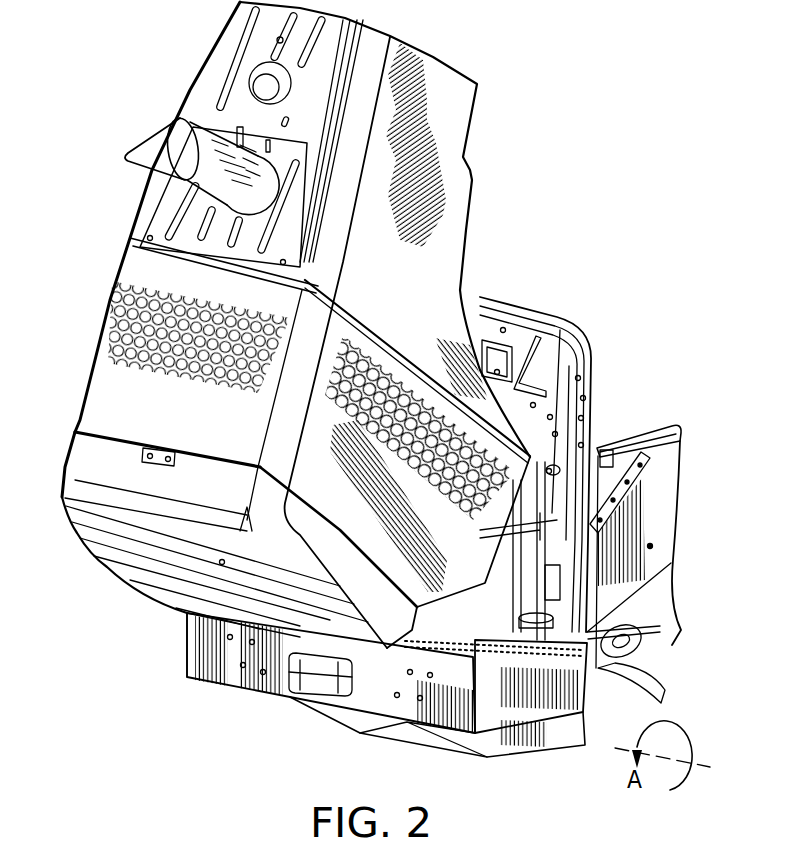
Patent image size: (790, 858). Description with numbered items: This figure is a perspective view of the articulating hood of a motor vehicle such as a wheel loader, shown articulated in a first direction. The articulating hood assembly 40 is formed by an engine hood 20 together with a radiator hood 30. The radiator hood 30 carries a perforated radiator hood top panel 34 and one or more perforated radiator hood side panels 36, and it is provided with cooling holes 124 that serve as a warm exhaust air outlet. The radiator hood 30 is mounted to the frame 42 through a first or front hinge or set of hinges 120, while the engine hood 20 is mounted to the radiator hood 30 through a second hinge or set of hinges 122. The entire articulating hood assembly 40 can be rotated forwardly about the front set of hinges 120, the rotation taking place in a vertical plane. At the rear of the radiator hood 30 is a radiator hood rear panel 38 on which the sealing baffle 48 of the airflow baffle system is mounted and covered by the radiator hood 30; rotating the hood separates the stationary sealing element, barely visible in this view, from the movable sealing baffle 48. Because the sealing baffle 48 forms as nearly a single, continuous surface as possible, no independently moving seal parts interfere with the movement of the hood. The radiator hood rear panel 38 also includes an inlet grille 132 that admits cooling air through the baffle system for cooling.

The engine hood 20 is at (150, 210).
The second hinge or set of hinges 122 is at (167, 267).
The articulating hood assembly 40 is at (88, 289).
The radiator hood 30 is at (77, 413).
The perforated radiator hood top panel 34 is at (243, 433).
The perforated radiator hood side panel 36 is at (474, 550).
The cooling holes 124 is at (483, 457).
The radiator hood rear panel 38 is at (107, 547).
The sealing baffle 48 is at (157, 563).
The inlet grille 132 is at (146, 668).
The frame 42 is at (394, 686).
The first hinge or set of hinges 120 is at (428, 645).